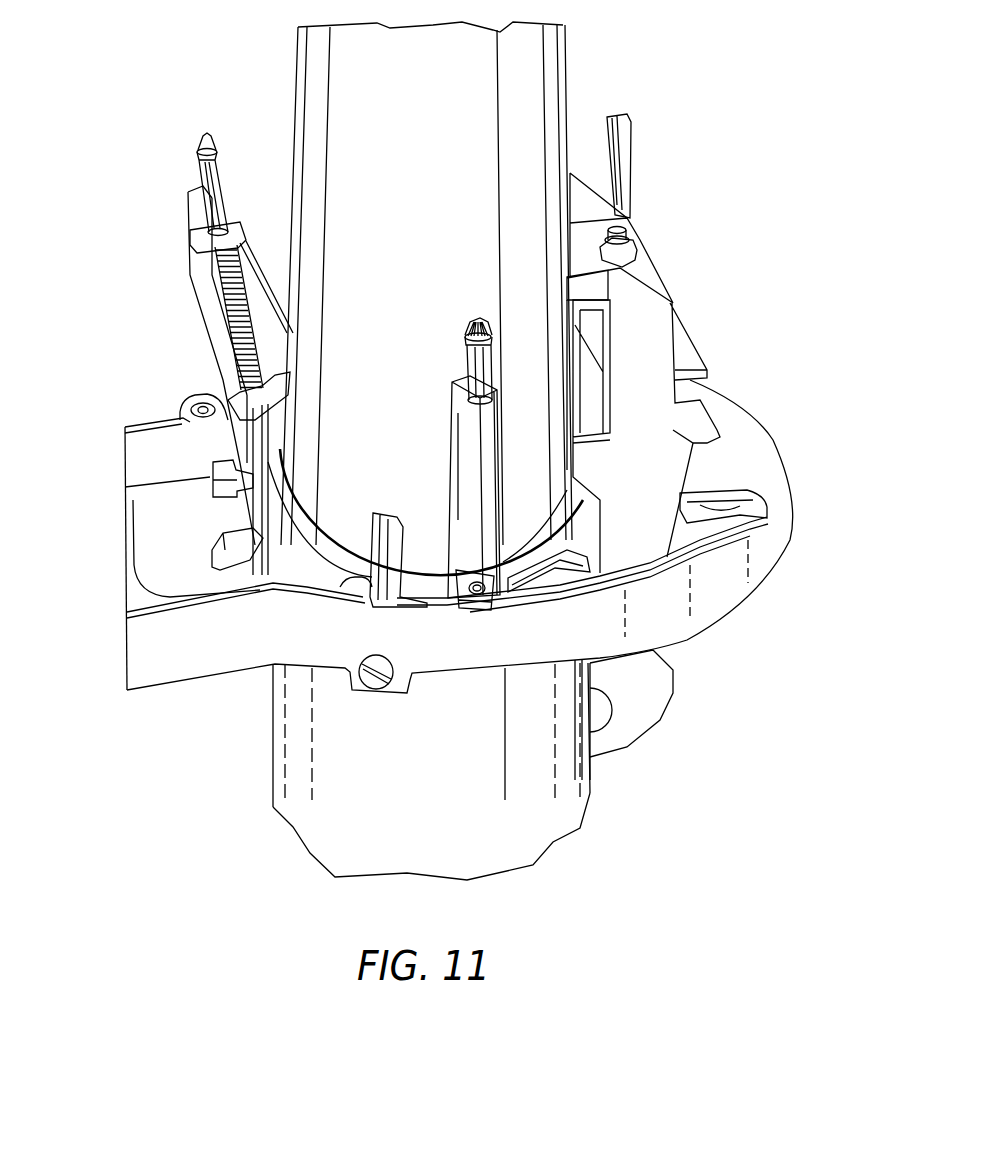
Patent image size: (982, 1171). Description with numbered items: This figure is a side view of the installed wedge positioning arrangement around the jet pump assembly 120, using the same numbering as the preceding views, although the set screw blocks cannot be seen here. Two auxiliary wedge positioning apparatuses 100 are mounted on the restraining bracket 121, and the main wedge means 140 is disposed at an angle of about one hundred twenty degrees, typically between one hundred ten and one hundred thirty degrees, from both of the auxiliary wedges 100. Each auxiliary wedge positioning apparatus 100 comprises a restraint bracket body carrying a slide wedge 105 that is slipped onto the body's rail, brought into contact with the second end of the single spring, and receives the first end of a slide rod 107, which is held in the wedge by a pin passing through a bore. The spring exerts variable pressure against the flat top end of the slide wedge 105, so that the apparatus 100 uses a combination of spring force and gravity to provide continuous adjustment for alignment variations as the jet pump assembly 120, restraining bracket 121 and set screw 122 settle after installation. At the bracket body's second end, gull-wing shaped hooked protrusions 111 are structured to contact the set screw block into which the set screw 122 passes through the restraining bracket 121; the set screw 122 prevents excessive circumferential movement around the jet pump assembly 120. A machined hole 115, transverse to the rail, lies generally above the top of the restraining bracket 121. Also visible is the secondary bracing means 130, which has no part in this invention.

The auxiliary wedge positioning apparatus 100 is at (152, 330).
The slide wedge 105 is at (295, 360).
The slide rod 107 is at (198, 147).
The hooked protrusions 111 is at (222, 540).
The machined hole 115 is at (197, 400).
The jet pump assembly 120 is at (303, 567).
The restraining bracket 121 is at (140, 425).
The set screw 122 is at (360, 693).
The secondary bracing means 130 is at (188, 210).
The main wedge means 140 is at (673, 428).